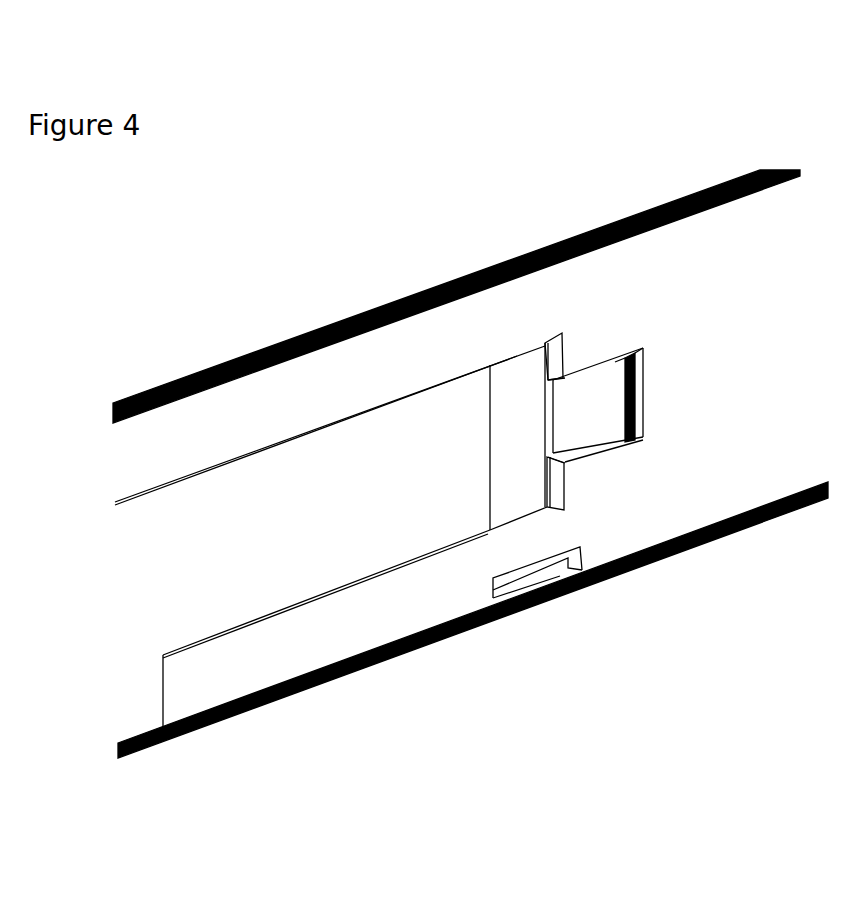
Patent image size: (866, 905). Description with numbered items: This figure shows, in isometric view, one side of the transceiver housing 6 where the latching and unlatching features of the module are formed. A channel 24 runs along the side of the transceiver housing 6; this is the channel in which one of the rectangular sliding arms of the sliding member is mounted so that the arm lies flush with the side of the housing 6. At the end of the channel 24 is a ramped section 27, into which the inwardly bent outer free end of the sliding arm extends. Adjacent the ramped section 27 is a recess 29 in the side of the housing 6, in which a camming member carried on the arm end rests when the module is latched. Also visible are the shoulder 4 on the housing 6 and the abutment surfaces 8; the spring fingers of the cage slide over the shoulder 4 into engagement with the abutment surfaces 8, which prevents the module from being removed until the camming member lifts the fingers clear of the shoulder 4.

The transceiver housing 6 is at (135, 300).
The ramped section 27 is at (517, 393).
The abutment surface 8 is at (540, 352).
The shoulder 4 is at (568, 357).
The recess 29 is at (587, 407).
The channel 24 is at (305, 542).